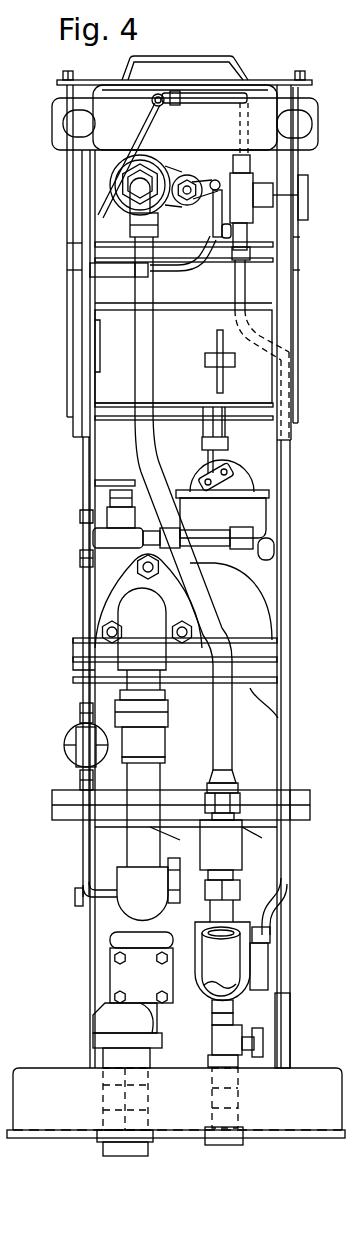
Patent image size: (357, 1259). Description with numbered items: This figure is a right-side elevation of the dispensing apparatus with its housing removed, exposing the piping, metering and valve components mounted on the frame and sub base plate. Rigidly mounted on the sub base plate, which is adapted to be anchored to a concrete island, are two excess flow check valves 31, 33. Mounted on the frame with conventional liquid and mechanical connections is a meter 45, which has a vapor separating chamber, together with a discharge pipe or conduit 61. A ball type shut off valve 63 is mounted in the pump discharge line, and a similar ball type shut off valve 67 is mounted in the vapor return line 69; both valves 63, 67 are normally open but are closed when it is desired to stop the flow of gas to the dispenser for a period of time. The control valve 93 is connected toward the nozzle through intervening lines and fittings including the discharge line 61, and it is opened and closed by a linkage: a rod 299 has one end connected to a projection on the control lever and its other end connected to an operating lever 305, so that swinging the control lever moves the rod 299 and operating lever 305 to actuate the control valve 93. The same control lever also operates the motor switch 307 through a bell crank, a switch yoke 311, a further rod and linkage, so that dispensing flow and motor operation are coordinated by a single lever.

The excess flow check valve 31 is at (103, 1110).
The excess flow check valve 33 is at (245, 1110).
The meter 45 is at (268, 749).
The discharge pipe 61 is at (226, 967).
The ball type shut off valve 63 is at (150, 1015).
The ball type shut off valve 67 is at (222, 1040).
The vapor return line 69 is at (283, 945).
The control valve 93 is at (167, 148).
The rod 299 is at (215, 290).
The operating lever 305 is at (229, 154).
The motor switch 307 is at (243, 520).
The switch yoke 311 is at (205, 441).